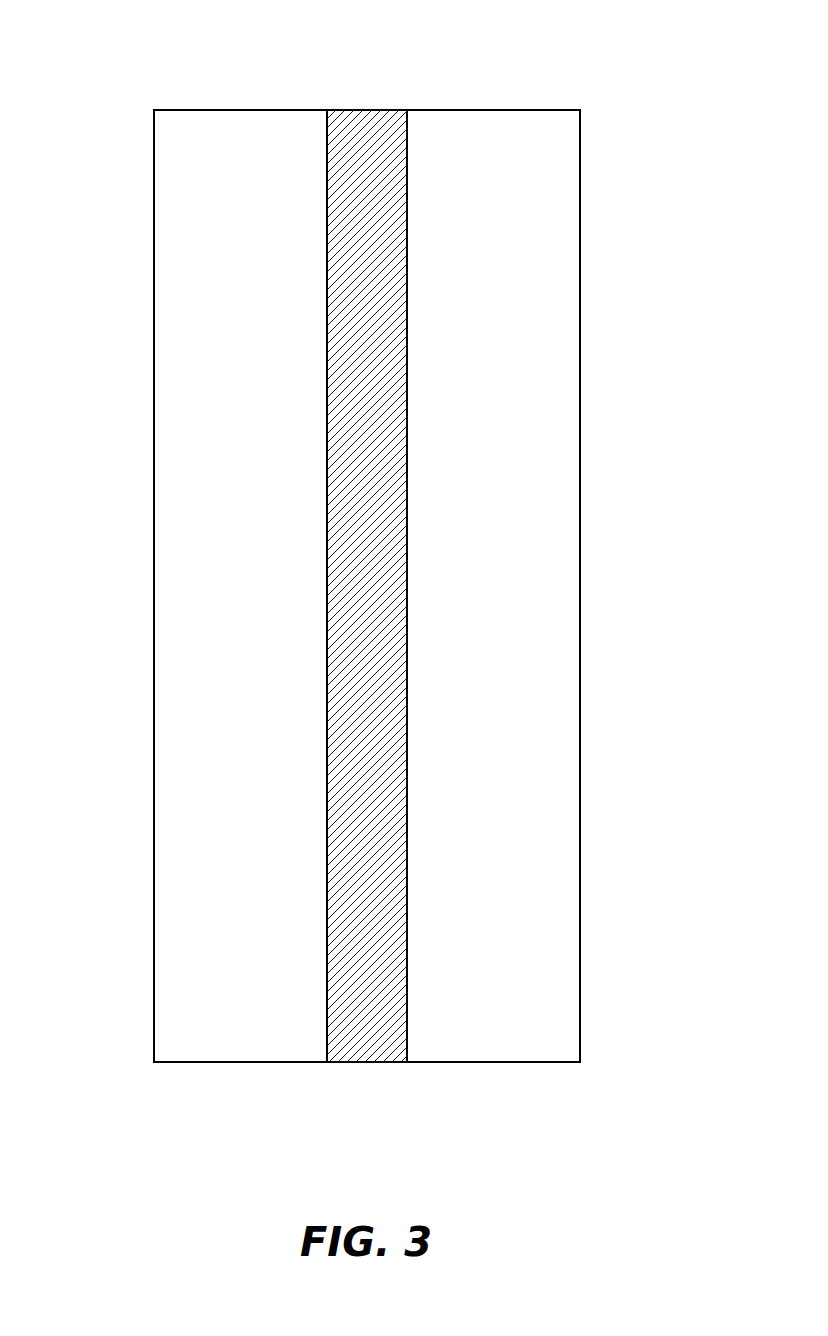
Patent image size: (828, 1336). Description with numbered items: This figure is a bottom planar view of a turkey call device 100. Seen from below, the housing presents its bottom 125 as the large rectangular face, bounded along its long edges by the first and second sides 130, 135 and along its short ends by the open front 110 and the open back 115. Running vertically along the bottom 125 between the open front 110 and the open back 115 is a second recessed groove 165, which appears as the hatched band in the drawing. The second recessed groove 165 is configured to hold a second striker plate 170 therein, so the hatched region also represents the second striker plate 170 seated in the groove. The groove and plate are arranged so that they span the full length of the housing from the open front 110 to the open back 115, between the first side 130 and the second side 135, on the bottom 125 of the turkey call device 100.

The turkey call device 100 is at (549, 49).
The open front 110 is at (487, 1063).
The open back 115 is at (288, 109).
The bottom 125 is at (555, 846).
The first side 130 is at (153, 576).
The second side 135 is at (582, 551).
The second recessed groove 165 is at (408, 1015).
The second striker plate 170 is at (327, 970).